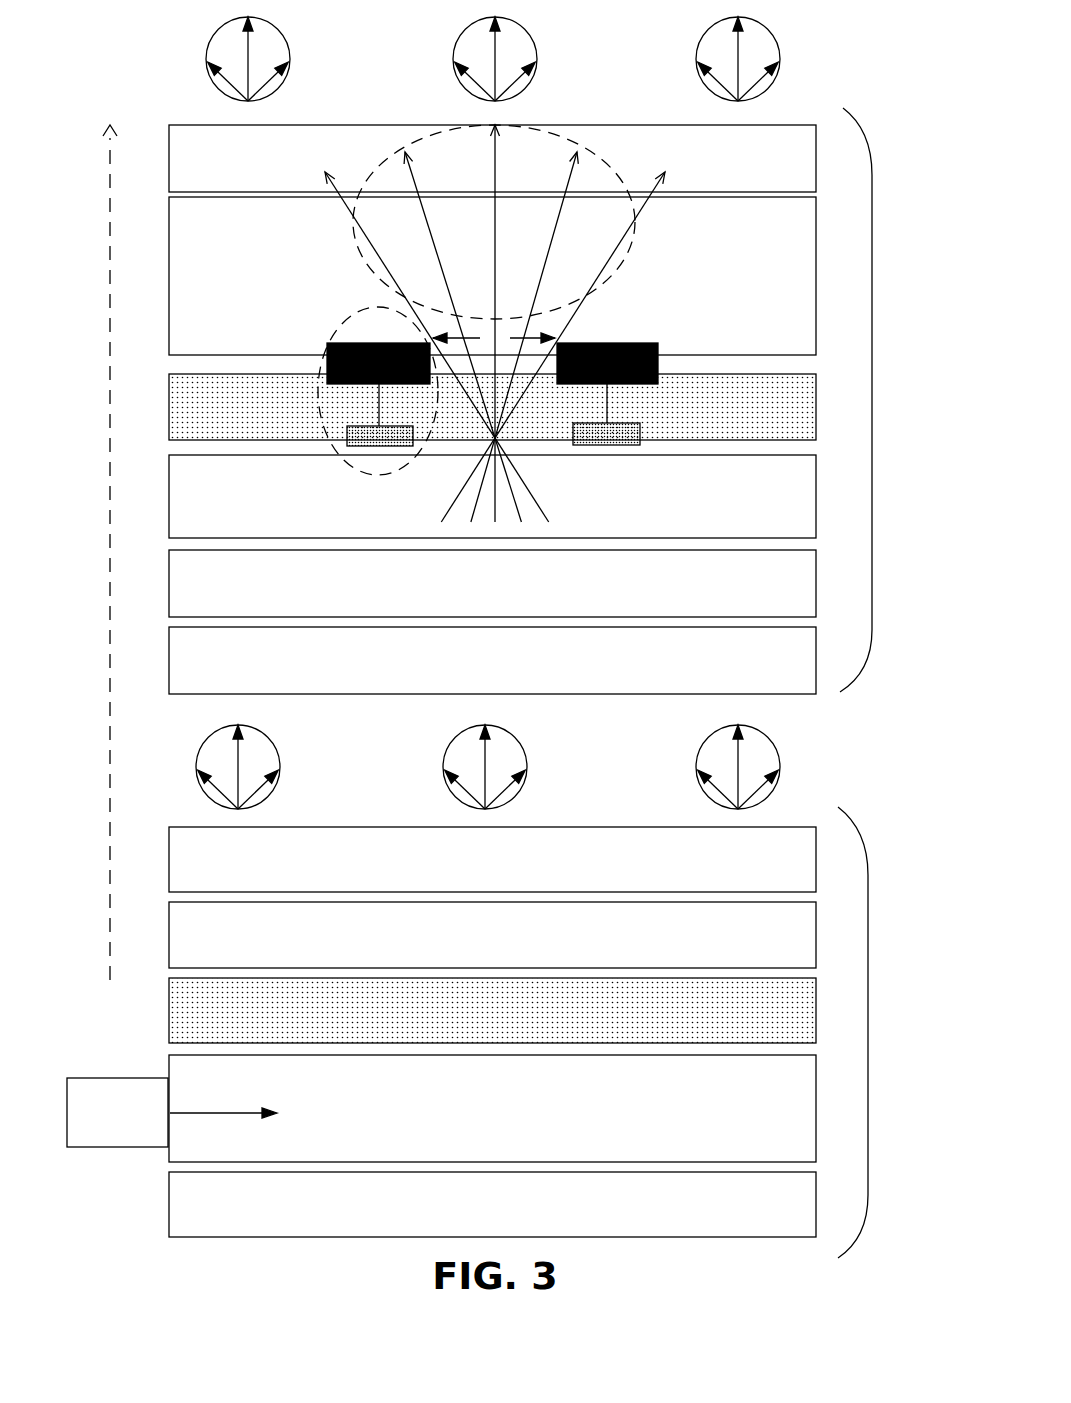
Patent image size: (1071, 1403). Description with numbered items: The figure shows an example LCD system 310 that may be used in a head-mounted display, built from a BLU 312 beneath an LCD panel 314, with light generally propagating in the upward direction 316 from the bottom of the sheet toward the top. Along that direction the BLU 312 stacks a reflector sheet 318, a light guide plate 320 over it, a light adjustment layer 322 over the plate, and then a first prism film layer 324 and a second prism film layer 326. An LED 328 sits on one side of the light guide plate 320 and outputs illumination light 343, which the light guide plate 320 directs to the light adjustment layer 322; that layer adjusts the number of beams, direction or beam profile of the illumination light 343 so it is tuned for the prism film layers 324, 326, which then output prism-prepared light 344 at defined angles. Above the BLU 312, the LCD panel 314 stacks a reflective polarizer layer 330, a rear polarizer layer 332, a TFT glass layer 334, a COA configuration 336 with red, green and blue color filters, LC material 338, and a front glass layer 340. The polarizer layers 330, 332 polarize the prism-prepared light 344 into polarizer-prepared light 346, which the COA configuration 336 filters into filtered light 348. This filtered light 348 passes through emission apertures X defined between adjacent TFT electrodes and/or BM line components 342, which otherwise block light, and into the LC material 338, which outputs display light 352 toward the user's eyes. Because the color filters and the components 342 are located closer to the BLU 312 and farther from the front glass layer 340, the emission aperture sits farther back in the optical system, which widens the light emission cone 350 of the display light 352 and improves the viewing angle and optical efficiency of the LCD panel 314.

The LCD system 310 is at (815, 82).
The BLU 312 is at (868, 1033).
The LCD panel 314 is at (872, 402).
The upward direction 316 is at (107, 665).
The reflector sheet 318 is at (492, 1204).
The light guide plate 320 is at (492, 1108).
The light adjustment layer 322 is at (492, 1010).
The first prism film layer 324 is at (492, 935).
The second prism film layer 326 is at (492, 859).
The LED 328 is at (117, 1112).
The reflective polarizer layer 330 is at (492, 660).
The rear polarizer layer 332 is at (492, 583).
The TFT glass layer 334 is at (492, 496).
The COA configuration 336 is at (169, 407).
The LC material 338 is at (492, 276).
The front glass layer 340 is at (492, 158).
The TFT electrodes and/or BM line components 342 is at (355, 468).
The illumination light 343 is at (205, 1113).
The prism-prepared light 344 is at (790, 770).
The polarizer-prepared light 346 is at (453, 497).
The filtered light 348 is at (578, 315).
The light emission cone 350 is at (633, 241).
The display light 352 is at (192, 62).